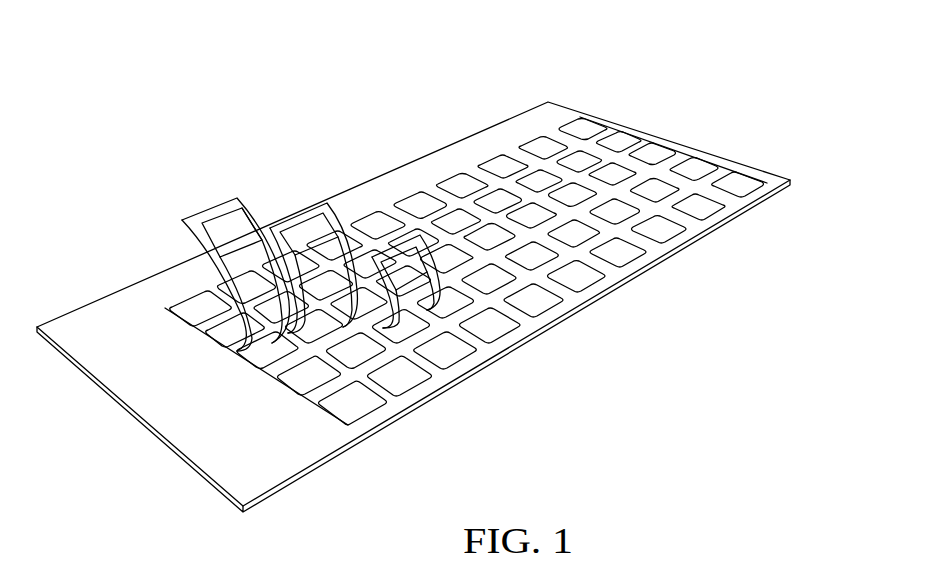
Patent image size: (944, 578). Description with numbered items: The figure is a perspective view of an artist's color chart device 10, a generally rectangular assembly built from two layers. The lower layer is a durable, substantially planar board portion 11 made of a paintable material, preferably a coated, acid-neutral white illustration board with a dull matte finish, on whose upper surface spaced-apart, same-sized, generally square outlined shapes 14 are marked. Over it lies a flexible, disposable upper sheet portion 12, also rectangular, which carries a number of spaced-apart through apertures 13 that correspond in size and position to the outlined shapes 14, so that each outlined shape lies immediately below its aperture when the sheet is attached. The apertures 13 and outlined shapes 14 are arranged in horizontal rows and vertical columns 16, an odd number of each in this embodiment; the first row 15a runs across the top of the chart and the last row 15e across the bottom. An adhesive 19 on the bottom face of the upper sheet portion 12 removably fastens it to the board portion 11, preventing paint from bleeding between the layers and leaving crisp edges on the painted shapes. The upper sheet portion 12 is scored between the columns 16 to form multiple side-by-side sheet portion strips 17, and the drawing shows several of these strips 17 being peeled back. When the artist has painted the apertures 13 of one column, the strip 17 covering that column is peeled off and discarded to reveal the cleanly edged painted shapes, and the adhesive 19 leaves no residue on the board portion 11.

The artist's color chart device 10 is at (600, 84).
The board portion 11 is at (124, 339).
The upper sheet portion 12 is at (434, 165).
The apertures 13 is at (240, 270).
The outlined shapes 14 is at (363, 410).
The first row 15a is at (617, 128).
The last row 15e is at (733, 167).
The columns 16 is at (760, 191).
The sheet portion strips 17 is at (218, 200).
The adhesive 19 is at (293, 222).